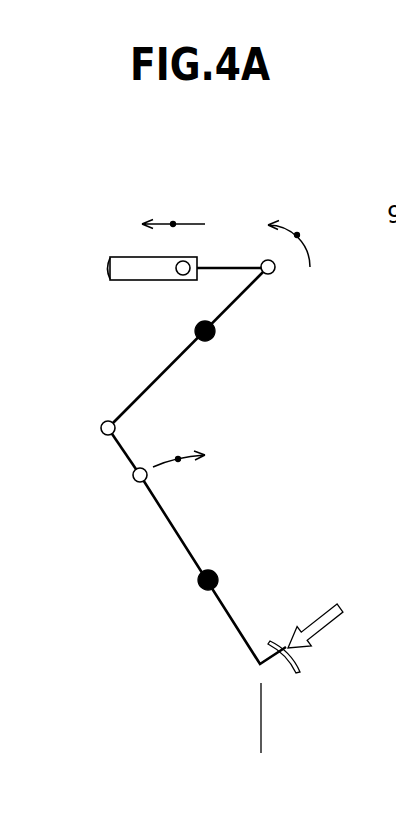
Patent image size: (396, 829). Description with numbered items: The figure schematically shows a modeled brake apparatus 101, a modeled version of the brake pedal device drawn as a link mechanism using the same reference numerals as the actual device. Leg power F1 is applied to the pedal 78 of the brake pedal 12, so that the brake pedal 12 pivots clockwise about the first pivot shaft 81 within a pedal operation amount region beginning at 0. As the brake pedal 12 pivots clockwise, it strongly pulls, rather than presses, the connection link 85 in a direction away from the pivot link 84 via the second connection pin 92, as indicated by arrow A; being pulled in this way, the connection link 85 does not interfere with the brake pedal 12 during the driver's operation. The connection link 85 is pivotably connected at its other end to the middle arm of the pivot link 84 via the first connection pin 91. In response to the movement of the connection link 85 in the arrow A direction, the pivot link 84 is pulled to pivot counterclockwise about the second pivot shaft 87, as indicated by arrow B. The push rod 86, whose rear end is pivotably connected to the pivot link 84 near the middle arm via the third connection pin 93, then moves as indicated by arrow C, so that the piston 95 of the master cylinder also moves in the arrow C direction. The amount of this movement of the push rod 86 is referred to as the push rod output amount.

The modeled brake apparatus 101 is at (263, 175).
The brake pedal 12 is at (180, 548).
The pedal 78 is at (305, 665).
The first pivot shaft 81 is at (200, 592).
The pivot link 84 is at (155, 378).
The connection link 85 is at (122, 455).
The push rod 86 is at (232, 262).
The second pivot shaft 87 is at (215, 338).
The first connection pin 91 is at (103, 424).
The second connection pin 92 is at (132, 483).
The third connection pin 93 is at (273, 273).
The piston 95 is at (125, 265).
The pedal operation amount region start 0 is at (261, 734).
The arrow A is at (178, 459).
The arrow B is at (297, 235).
The arrow C is at (173, 224).
The leg power F1 is at (329, 625).